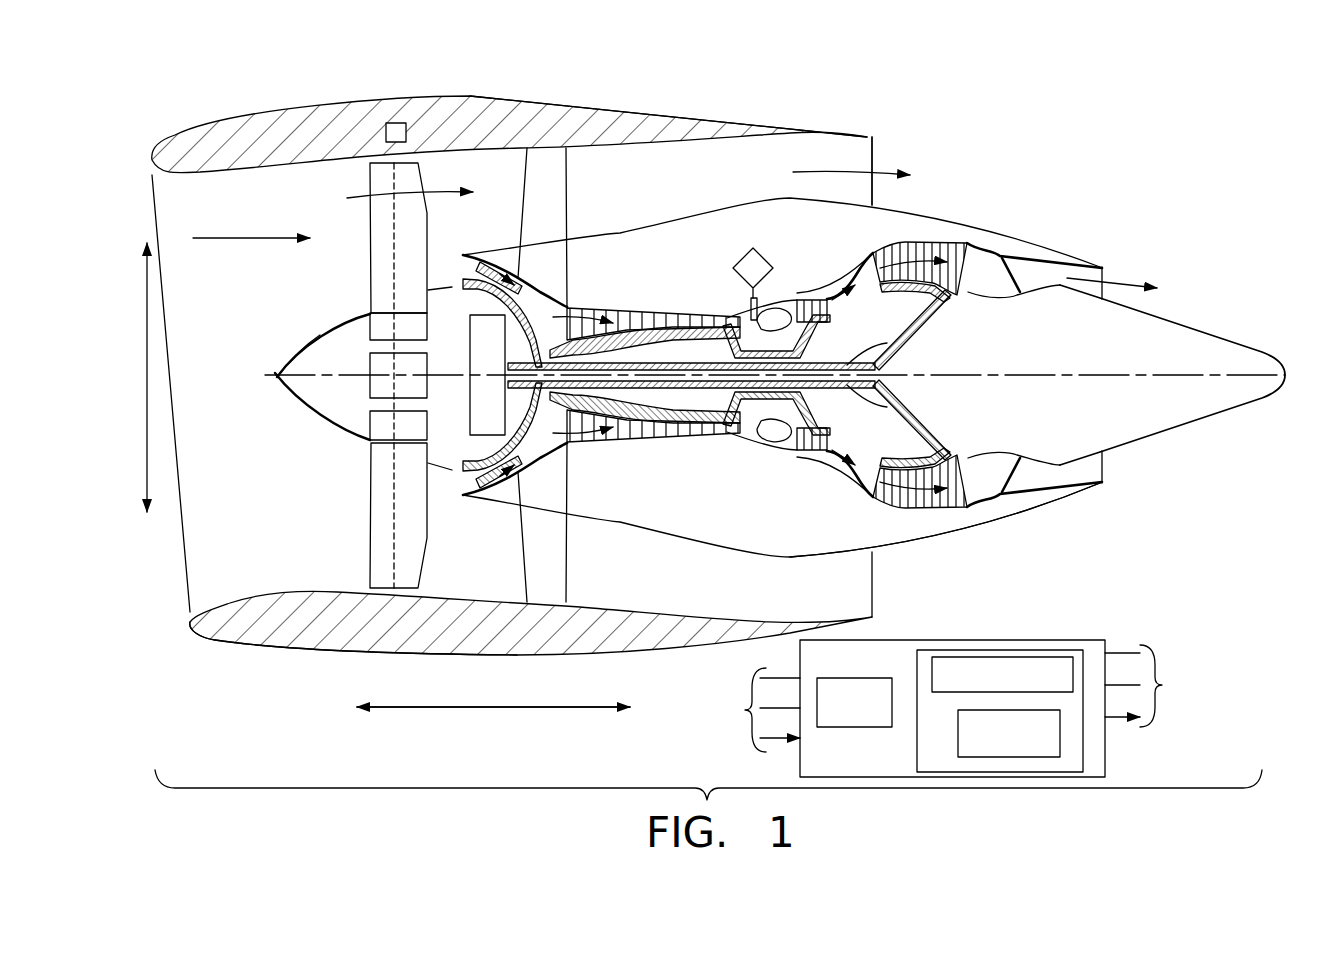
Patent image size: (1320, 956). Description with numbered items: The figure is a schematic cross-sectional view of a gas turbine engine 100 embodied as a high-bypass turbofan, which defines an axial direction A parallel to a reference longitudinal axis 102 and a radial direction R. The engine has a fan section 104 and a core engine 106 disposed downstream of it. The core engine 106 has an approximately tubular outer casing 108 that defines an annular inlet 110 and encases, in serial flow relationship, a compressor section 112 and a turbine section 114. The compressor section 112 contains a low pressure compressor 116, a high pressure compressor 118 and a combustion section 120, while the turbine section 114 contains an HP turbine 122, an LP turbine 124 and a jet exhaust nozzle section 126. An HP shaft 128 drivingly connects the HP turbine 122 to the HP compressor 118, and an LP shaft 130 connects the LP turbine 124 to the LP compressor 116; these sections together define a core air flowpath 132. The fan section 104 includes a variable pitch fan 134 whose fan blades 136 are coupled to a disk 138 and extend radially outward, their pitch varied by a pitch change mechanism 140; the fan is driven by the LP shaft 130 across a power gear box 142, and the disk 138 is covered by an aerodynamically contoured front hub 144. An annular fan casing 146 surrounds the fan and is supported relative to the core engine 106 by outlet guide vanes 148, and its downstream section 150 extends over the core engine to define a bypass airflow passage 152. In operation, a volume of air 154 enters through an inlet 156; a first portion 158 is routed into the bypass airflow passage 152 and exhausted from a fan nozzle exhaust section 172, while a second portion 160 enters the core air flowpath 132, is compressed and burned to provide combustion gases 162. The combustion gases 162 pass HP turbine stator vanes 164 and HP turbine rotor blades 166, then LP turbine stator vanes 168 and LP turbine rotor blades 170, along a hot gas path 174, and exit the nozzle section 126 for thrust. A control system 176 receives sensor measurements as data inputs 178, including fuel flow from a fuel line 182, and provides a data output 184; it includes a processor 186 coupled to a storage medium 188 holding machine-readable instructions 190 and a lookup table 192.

The gas turbine engine 100 is at (1022, 125).
The longitudinal axis 102 is at (1045, 375).
The fan section 104 is at (285, 196).
The core engine 106 is at (736, 246).
The outer casing 108 is at (733, 540).
The annular inlet 110 is at (465, 486).
The compressor section 112 is at (672, 450).
The turbine section 114 is at (921, 536).
The low pressure compressor 116 is at (508, 530).
The high pressure compressor 118 is at (597, 437).
The combustion section 120 is at (768, 453).
The HP turbine 122 is at (835, 445).
The LP turbine 124 is at (959, 508).
The jet exhaust nozzle section 126 is at (1016, 491).
The HP shaft 128 is at (805, 343).
The LP shaft 130 is at (900, 343).
The core air flowpath 132 is at (540, 458).
The variable pitch fan 134 is at (326, 426).
The fan blades 136 is at (370, 531).
The disk 138 is at (380, 327).
The pitch change mechanism 140 is at (372, 363).
The power gear box 142 is at (488, 328).
The front hub 144 is at (288, 395).
The annular fan casing 146 is at (412, 660).
The outlet guide vanes 148 is at (567, 197).
The downstream section 150 is at (755, 121).
The bypass airflow passage 152 is at (717, 188).
The volume of air 154 is at (247, 237).
The inlet 156 is at (190, 600).
The first portion 158 is at (387, 197).
The second portion 160 is at (450, 265).
The combustion gases 162 is at (833, 292).
The HP turbine stator vanes 164 is at (617, 313).
The HP turbine rotor blades 166 is at (813, 447).
The LP turbine stator vanes 168 is at (880, 495).
The LP turbine rotor blades 170 is at (883, 510).
The fan nozzle exhaust section 172 is at (858, 152).
The hot gas path 174 is at (845, 273).
The control system 176 is at (993, 640).
The data inputs 178 is at (740, 712).
The fuel line 182 is at (733, 270).
The data output 184 is at (1158, 686).
The processor 186 is at (876, 714).
The storage medium 188 is at (917, 663).
The machine-readable instructions 190 is at (1030, 745).
The lookup table 192 is at (1023, 686).
The radial direction R is at (185, 374).
The axial direction A is at (493, 688).